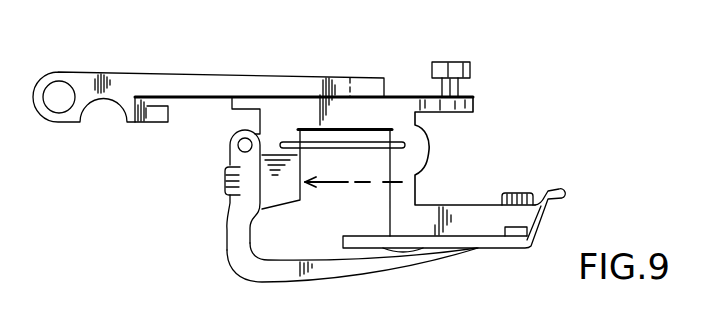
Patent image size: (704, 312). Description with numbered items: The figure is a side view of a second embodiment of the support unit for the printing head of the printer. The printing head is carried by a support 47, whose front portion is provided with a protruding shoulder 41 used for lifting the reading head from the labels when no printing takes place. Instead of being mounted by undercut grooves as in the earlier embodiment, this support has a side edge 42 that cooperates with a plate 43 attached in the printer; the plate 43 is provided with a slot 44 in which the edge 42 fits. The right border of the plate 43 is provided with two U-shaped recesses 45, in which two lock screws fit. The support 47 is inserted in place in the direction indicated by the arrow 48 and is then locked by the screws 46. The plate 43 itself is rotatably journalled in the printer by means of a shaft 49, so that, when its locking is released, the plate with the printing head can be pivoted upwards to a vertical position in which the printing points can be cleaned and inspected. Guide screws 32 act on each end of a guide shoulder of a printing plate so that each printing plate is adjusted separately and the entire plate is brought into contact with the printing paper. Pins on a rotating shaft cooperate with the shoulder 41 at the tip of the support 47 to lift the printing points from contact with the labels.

The guide screws 32 is at (521, 193).
The protruding shoulder 41 is at (565, 190).
The side edge 42 is at (230, 107).
The plate 43 is at (228, 78).
The slot 44 is at (153, 106).
The U-shaped recesses 45 is at (355, 79).
The screws 46 is at (458, 62).
The support 47 is at (490, 144).
The arrow 48 is at (370, 184).
The shaft 49 is at (55, 100).